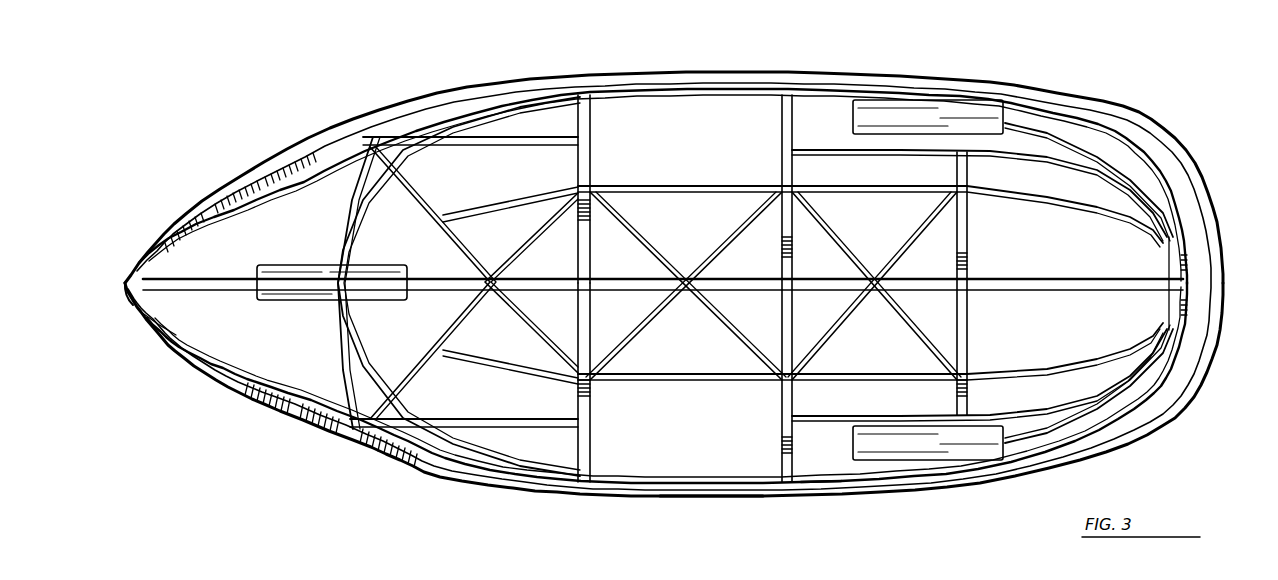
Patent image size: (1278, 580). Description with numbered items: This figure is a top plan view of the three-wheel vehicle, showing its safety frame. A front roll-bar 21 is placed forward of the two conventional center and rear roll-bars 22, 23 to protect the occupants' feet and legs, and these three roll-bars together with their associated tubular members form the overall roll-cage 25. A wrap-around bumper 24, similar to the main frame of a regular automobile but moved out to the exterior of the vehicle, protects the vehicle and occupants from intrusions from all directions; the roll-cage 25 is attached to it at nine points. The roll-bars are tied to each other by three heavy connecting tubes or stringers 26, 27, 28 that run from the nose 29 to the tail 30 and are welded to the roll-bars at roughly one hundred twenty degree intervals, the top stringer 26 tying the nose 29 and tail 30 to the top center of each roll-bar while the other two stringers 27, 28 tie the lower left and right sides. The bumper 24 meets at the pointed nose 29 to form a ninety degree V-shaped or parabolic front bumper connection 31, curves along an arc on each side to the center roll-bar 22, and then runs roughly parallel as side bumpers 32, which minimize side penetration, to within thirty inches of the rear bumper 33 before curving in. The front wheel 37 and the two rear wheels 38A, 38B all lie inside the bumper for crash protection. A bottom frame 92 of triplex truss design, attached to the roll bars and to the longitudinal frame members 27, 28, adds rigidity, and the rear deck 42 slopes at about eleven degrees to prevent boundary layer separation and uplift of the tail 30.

The front roll-bar 21 is at (340, 353).
The center roll-bar 22 is at (590, 416).
The rear roll-bar 23 is at (784, 418).
The wrap-around bumper 24 is at (814, 489).
The roll-cage 25 is at (594, 130).
The top stringer 26 is at (525, 278).
The stringer 27 is at (446, 100).
The stringer 28 is at (495, 473).
The nose 29 is at (123, 290).
The tail 30 is at (1193, 276).
The front bumper connection 31 is at (177, 337).
The side bumpers 32 is at (712, 496).
The rear bumper 33 is at (1213, 303).
The front wheel 37 is at (313, 298).
The rear wheel 38A is at (940, 126).
The rear wheel 38B is at (957, 440).
The rear deck 42 is at (1040, 279).
The bottom frame 92 is at (658, 184).